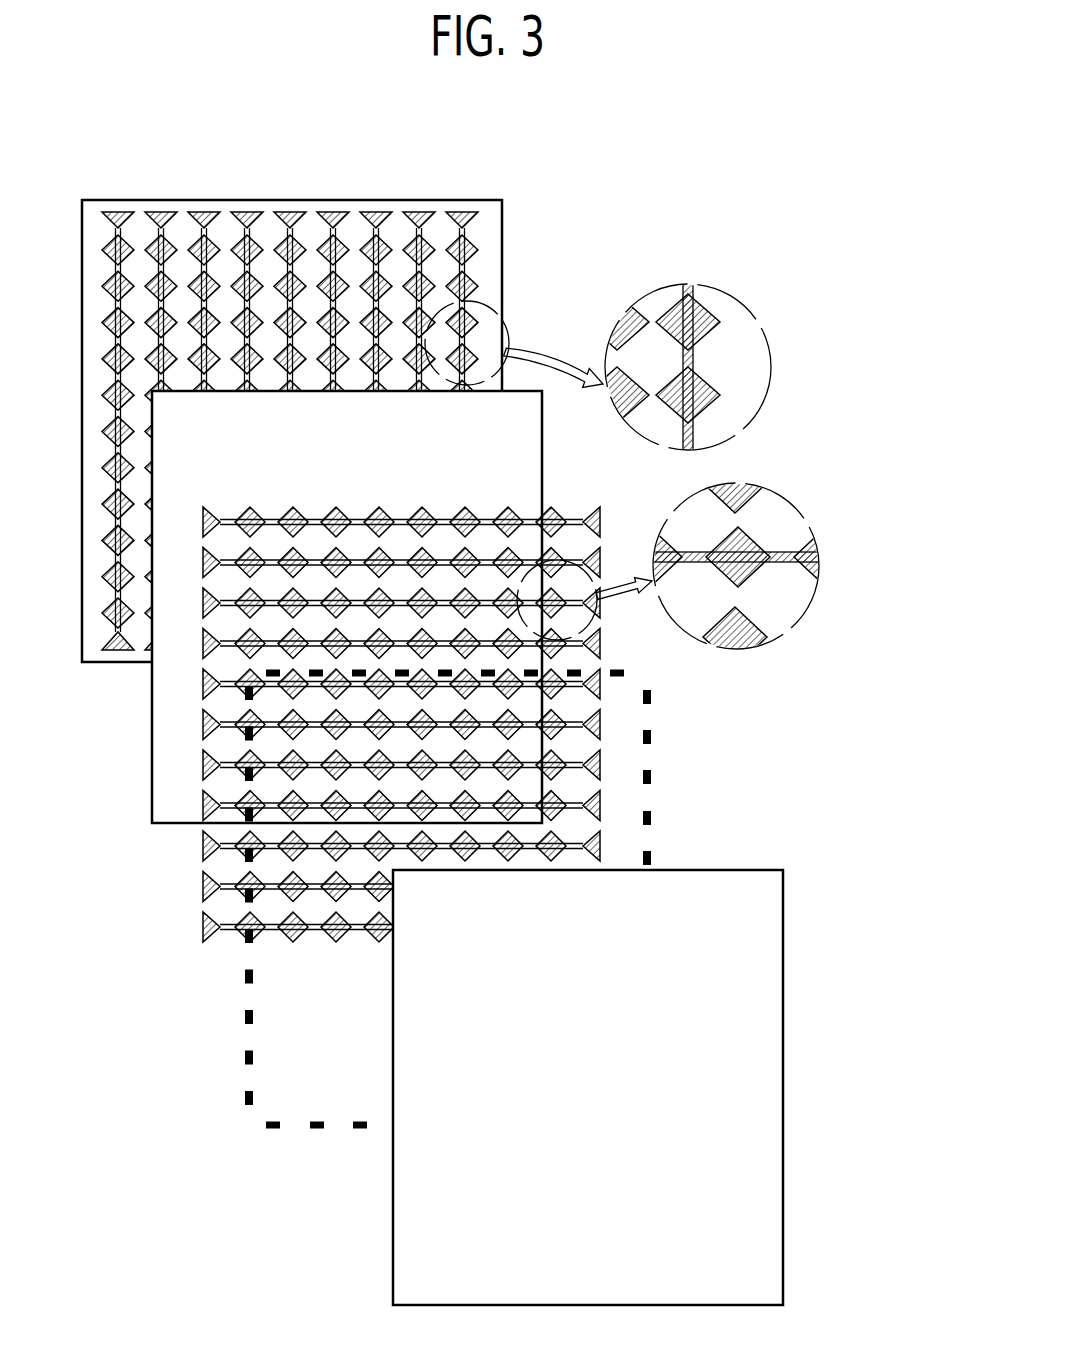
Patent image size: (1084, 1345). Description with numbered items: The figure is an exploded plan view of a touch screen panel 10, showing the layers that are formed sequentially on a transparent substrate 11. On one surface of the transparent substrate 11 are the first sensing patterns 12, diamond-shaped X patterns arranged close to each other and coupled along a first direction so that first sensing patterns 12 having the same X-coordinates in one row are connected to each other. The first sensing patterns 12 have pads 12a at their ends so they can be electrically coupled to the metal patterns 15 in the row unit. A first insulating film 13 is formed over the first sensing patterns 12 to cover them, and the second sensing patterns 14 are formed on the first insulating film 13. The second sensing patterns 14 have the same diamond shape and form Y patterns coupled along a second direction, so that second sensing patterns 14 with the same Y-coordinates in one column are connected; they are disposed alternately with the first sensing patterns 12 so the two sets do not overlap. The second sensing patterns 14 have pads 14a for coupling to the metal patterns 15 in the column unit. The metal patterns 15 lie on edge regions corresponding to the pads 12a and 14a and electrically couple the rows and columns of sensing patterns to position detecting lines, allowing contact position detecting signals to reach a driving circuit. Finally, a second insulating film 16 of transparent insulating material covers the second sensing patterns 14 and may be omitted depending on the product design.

The touch screen panel 10 is at (514, 720).
The transparent substrate 11 is at (438, 398).
The first sensing patterns 12 is at (448, 392).
The pads 12a is at (465, 210).
The first insulating film 13 is at (543, 457).
The second sensing patterns 14 is at (554, 681).
The pads 14a is at (208, 518).
The metal patterns 15 is at (652, 736).
The second insulating film 16 is at (785, 890).